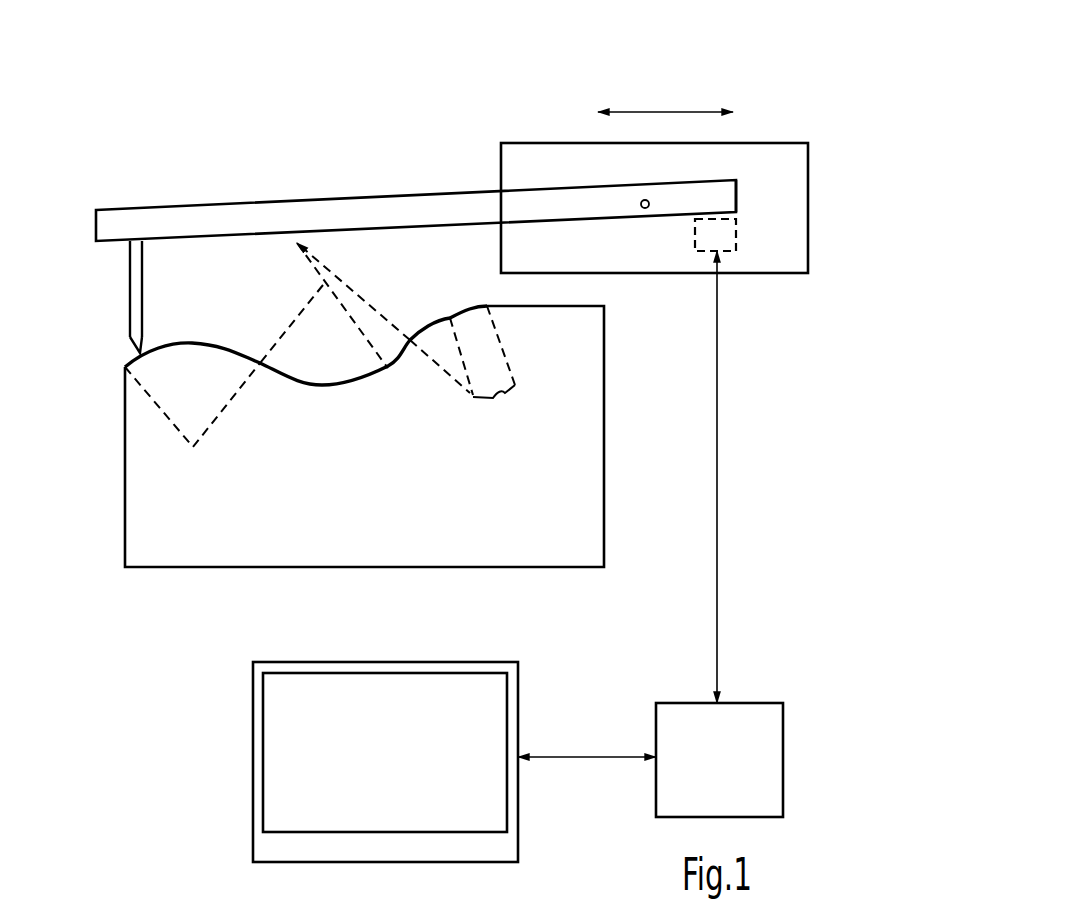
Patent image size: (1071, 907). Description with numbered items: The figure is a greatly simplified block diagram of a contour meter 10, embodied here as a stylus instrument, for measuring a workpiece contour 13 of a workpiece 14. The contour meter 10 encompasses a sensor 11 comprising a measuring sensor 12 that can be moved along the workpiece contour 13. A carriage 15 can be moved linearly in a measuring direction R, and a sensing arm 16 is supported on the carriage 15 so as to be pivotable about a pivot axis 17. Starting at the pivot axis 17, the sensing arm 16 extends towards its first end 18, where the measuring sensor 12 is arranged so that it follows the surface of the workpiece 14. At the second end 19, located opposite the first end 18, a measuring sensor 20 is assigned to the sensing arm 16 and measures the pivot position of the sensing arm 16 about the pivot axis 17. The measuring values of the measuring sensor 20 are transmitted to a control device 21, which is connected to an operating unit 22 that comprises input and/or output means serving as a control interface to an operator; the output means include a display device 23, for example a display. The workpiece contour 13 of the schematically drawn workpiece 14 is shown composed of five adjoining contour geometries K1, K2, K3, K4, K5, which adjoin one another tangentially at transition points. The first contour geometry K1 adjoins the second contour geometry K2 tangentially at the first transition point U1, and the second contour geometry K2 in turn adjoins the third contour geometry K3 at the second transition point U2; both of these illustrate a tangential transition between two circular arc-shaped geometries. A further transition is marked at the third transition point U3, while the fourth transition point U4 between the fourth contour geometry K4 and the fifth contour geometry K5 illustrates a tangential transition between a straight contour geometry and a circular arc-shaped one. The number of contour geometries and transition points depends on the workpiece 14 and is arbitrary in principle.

The contour meter 10 is at (694, 75).
The sensor 11 is at (248, 172).
The measuring sensor 12 is at (128, 292).
The workpiece contour 13 is at (228, 335).
The workpiece 14 is at (128, 500).
The carriage 15 is at (523, 155).
The sensing arm 16 is at (418, 208).
The pivot axis 17 is at (646, 208).
The first end 18 is at (130, 218).
The second end 19 is at (723, 196).
The measuring sensor 20 is at (732, 252).
The control device 21 is at (762, 757).
The operating unit 22 is at (387, 853).
The display device 23 is at (400, 695).
The measuring direction R is at (645, 112).
The first contour geometry K1 is at (233, 398).
The second contour geometry K2 is at (278, 338).
The third contour geometry K3 is at (351, 288).
The fourth contour geometry K4 is at (438, 366).
The fifth contour geometry K5 is at (484, 364).
The first transition point U1 is at (262, 368).
The second transition point U2 is at (387, 370).
The third transition point U3 is at (410, 338).
The fourth transition point U4 is at (450, 316).